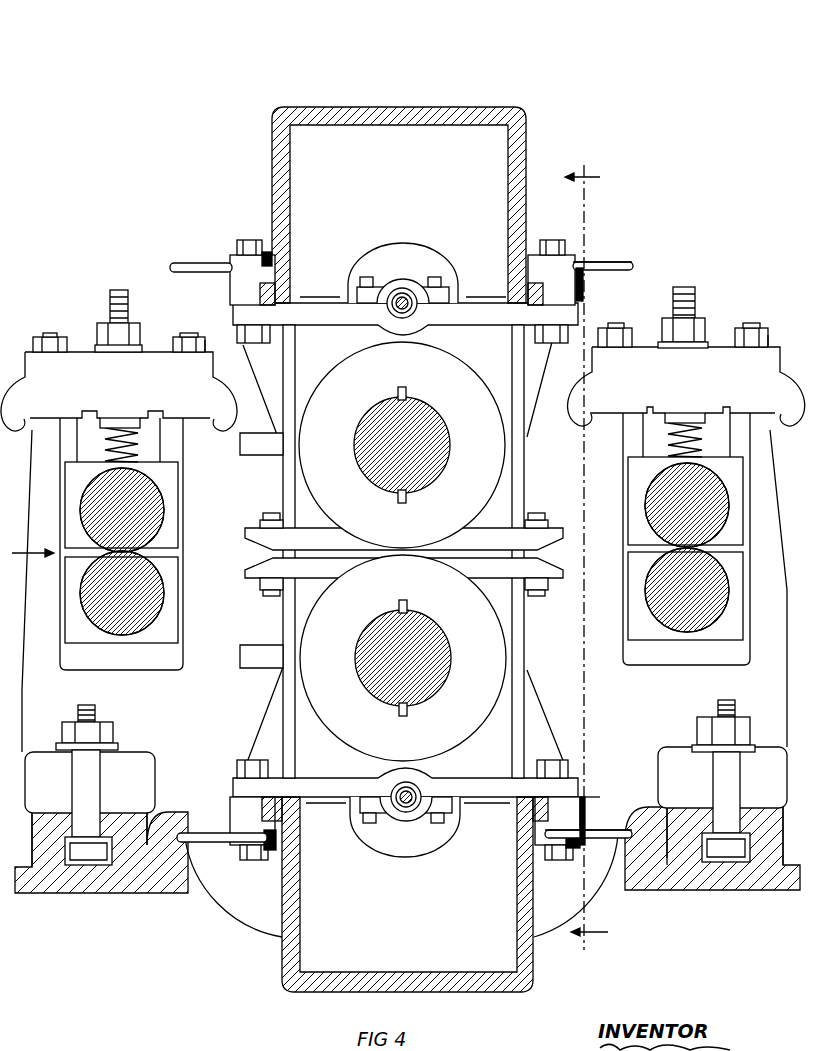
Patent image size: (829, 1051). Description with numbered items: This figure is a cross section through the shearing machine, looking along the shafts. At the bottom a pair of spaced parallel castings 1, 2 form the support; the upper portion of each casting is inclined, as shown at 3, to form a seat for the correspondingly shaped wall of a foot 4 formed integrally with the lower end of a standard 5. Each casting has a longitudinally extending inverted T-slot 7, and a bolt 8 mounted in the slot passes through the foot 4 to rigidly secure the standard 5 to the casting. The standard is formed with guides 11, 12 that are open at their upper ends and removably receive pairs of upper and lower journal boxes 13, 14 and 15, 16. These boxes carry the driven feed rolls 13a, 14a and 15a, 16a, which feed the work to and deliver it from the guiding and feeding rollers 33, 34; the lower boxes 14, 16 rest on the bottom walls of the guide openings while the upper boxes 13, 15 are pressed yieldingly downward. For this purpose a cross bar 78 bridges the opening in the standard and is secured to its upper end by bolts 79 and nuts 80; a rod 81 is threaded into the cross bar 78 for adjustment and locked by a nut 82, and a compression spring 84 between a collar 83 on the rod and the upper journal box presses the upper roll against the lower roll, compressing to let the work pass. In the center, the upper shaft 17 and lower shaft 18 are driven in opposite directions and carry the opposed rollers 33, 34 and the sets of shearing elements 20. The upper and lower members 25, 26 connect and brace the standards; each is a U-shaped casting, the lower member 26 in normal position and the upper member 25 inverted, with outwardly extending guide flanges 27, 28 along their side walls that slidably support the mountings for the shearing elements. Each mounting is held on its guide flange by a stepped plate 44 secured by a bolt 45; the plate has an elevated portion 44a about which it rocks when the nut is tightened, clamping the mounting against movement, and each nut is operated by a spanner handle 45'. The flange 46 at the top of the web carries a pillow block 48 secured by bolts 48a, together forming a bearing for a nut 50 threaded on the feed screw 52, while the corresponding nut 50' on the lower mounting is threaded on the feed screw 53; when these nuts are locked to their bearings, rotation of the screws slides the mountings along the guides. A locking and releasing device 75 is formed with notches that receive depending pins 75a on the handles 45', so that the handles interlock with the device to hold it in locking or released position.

The casting 1 is at (677, 866).
The casting 2 is at (95, 883).
The inclined upper portion 3 is at (127, 800).
The foot 4 is at (132, 756).
The standard 5 is at (591, 562).
The inverted T-slot 7 is at (70, 818).
The bolt 8 is at (90, 765).
The guide 11 is at (730, 428).
The guide 12 is at (75, 435).
The upper journal box 13 is at (643, 478).
The upper feed roll 13a is at (665, 511).
The lower journal box 14 is at (643, 563).
The lower feed roll 14a is at (672, 599).
The upper journal box 15 is at (160, 481).
The upper feed roll 15a is at (140, 512).
The lower journal box 16 is at (160, 566).
The lower feed roll 16a is at (145, 597).
The upper shaft 17 is at (437, 442).
The lower shaft 18 is at (440, 652).
The set of shearing elements 20 is at (404, 554).
The upper member 25 is at (490, 108).
The lower member 26 is at (525, 983).
The guide flange 27 is at (258, 292).
The guide flange 28 is at (260, 809).
The upper guiding and feeding roller 33 is at (490, 437).
The lower guiding and feeding roller 34 is at (488, 636).
The stepped plate 44 is at (583, 860).
The off-set or elevated portion 44a is at (265, 290).
The bolt 45 is at (402, 551).
The handle 45' is at (418, 546).
The flange 46 is at (350, 316).
The pillow block 48 is at (450, 281).
The bolt 48a is at (355, 286).
The nut 50 is at (383, 270).
The nut 50' is at (388, 837).
The feed screw 52 is at (412, 290).
The feed screw 53 is at (415, 813).
The locking and releasing device 75 is at (590, 298).
The depending pin 75a is at (565, 288).
The cross bar 78 is at (403, 389).
The bolt 79 is at (190, 337).
The nut 80 is at (205, 345).
The rod 81 is at (118, 296).
The nut 82 is at (112, 330).
The collar 83 is at (125, 428).
The compression spring 84 is at (140, 445).